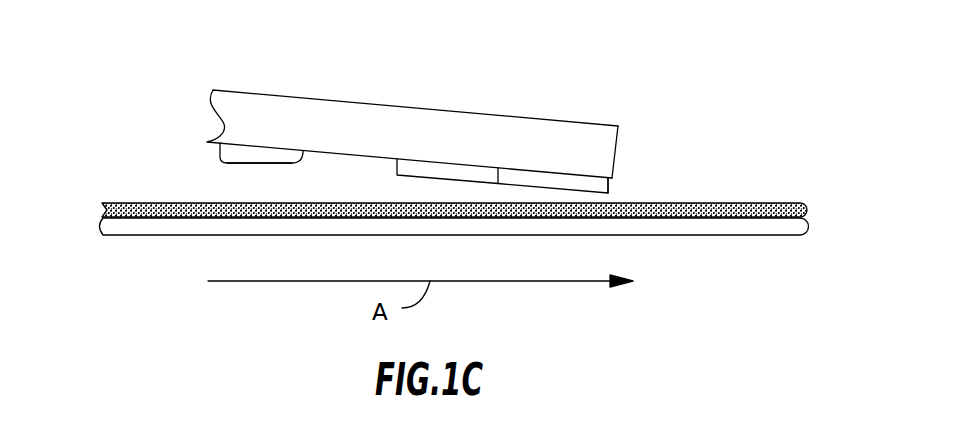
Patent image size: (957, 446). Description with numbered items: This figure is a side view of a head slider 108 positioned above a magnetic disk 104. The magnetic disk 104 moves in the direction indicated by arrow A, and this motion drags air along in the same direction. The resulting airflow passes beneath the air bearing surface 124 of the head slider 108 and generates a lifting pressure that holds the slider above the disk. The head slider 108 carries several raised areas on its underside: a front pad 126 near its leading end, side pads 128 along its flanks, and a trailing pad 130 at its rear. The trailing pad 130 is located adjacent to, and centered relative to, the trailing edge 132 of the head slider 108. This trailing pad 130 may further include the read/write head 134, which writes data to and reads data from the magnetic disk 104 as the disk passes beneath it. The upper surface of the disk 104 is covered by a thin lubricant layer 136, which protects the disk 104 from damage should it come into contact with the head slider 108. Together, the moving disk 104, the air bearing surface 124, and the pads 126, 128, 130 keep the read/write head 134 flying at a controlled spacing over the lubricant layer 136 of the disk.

The magnetic disk 104 is at (187, 225).
The head slider 108 is at (330, 112).
The air bearing surface 124 is at (247, 165).
The front pad 126 is at (217, 160).
The side pads 128 is at (413, 170).
The trailing pad 130 is at (548, 183).
The trailing edge 132 is at (623, 130).
The read/write head 134 is at (615, 184).
The lubricant layer 136 is at (752, 205).